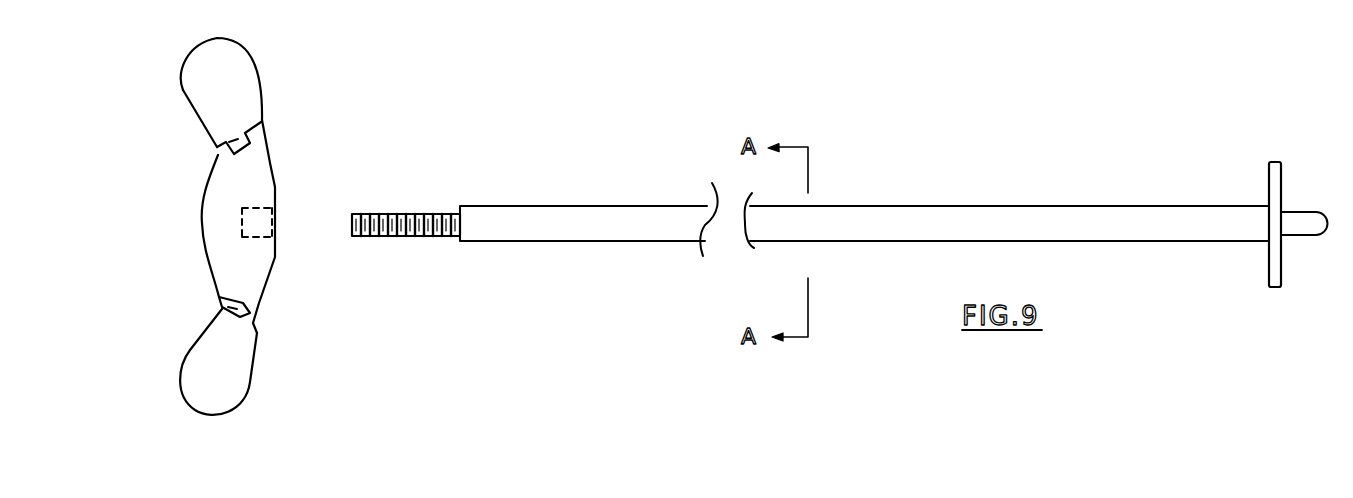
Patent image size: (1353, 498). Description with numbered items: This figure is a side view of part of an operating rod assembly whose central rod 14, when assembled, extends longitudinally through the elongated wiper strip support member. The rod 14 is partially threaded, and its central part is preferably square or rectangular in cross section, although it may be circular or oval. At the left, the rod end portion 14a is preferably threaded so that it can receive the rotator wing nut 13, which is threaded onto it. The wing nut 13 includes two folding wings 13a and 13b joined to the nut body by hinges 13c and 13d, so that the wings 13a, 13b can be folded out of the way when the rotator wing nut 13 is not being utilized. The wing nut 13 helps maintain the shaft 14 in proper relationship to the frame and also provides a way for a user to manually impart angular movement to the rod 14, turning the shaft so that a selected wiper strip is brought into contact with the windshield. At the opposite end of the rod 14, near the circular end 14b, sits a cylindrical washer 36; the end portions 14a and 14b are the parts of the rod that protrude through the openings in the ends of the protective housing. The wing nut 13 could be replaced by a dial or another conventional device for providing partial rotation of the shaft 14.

The rotator wing nut 13 is at (228, 226).
The folding wing 13a is at (238, 357).
The folding wing 13b is at (242, 76).
The hinge 13c is at (219, 298).
The hinge 13d is at (214, 155).
The central rod 14 is at (840, 243).
The rod end portion 14a is at (466, 243).
The circular end 14b is at (1307, 228).
The cylindrical washer 36 is at (1272, 183).